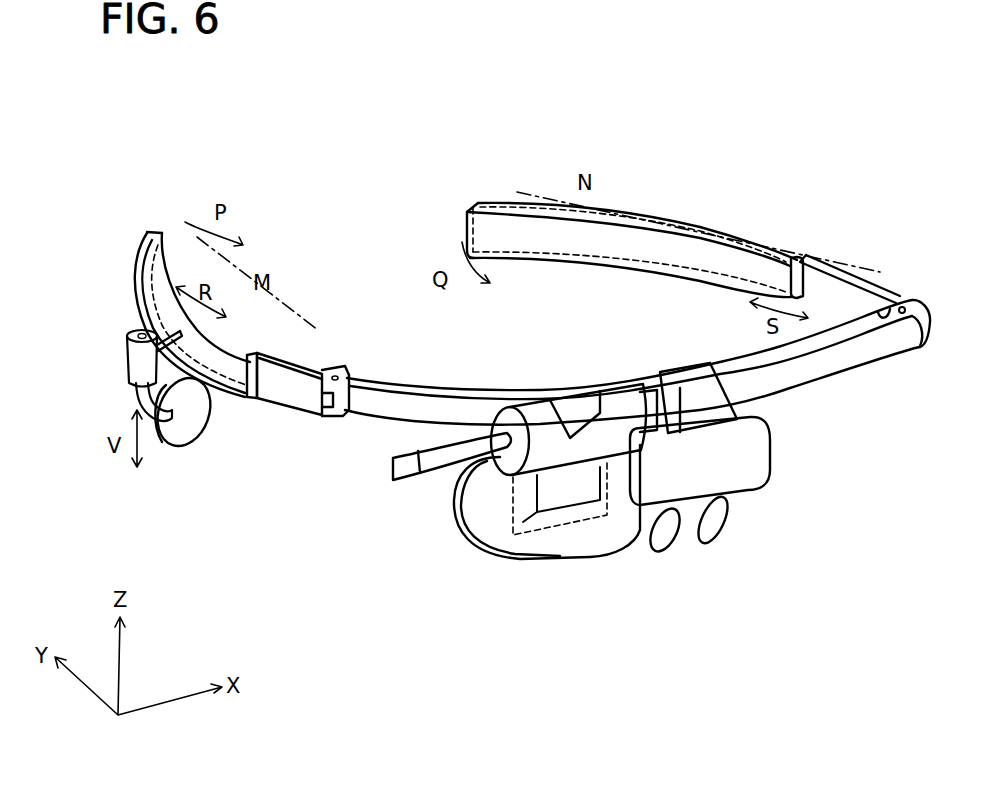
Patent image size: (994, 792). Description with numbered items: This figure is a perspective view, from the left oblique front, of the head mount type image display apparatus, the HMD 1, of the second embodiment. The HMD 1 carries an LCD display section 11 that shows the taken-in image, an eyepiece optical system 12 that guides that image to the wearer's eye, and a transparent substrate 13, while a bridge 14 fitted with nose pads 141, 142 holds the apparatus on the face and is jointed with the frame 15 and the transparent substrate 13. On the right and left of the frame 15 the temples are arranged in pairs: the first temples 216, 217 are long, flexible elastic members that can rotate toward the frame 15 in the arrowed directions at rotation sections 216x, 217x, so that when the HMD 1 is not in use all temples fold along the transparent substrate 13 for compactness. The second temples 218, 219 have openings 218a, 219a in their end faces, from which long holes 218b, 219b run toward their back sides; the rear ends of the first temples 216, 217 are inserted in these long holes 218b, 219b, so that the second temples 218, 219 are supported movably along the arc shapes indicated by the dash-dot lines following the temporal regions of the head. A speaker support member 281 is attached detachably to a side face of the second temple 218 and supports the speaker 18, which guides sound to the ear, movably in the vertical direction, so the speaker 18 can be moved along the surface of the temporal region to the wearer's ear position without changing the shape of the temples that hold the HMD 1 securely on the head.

The HMD 1 is at (419, 170).
The LCD display section 11 is at (608, 400).
The eyepiece optical system 12 is at (577, 482).
The transparent substrate 13 is at (551, 540).
The bridge 14 is at (748, 457).
The nose pad 141 is at (676, 540).
The nose pad 142 is at (723, 522).
The frame 15 is at (427, 386).
The speaker (earphone) 18 is at (197, 440).
The first temple 216 is at (293, 393).
The rotation section 216x is at (334, 375).
The first temple 217 is at (835, 267).
The rotation section 217x is at (895, 300).
The second temple 218 is at (128, 260).
The opening 218a is at (263, 402).
The long hole 218b is at (233, 363).
The second temple 219 is at (640, 222).
The opening 219a is at (813, 252).
The long hole 219b is at (690, 255).
The speaker support member 281 is at (128, 372).